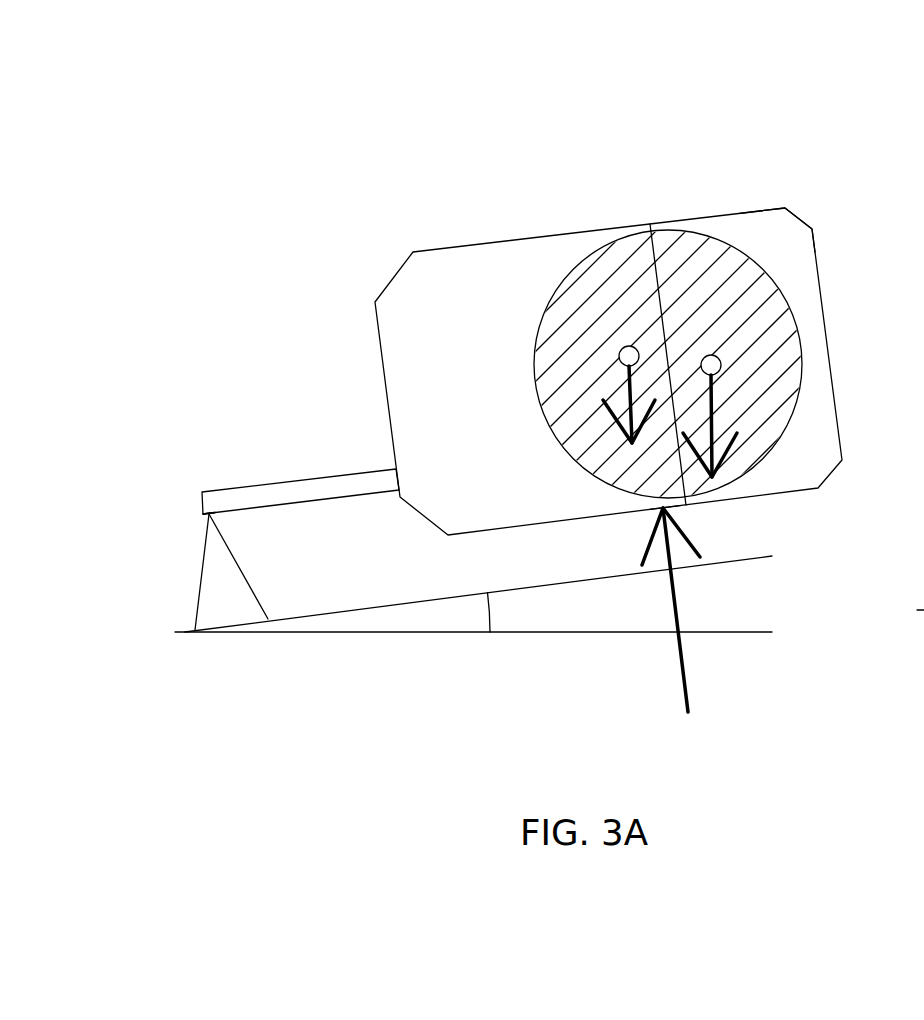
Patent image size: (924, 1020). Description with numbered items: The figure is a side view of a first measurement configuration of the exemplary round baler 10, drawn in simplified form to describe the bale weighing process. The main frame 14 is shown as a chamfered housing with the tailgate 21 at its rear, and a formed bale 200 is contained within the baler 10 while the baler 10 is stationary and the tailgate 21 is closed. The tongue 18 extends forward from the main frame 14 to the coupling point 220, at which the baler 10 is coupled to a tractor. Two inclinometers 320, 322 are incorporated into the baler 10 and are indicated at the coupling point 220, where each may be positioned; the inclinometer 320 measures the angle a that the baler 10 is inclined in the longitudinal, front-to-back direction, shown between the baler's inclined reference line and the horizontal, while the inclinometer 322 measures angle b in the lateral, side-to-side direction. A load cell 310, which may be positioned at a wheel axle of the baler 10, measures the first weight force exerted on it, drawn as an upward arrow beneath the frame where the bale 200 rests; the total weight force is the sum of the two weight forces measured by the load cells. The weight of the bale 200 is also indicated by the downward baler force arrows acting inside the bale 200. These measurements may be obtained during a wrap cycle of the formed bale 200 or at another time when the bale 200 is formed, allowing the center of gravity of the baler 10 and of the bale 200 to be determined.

The round baler 10 is at (352, 146).
The main frame 14 is at (460, 245).
The tailgate 21 is at (757, 209).
The bale 200 is at (783, 345).
The tongue 18 is at (298, 478).
The coupling point 220 is at (235, 608).
The inclinometer 320 is at (209, 514).
The inclinometer 322 is at (209, 514).
The load cell 310 is at (657, 509).